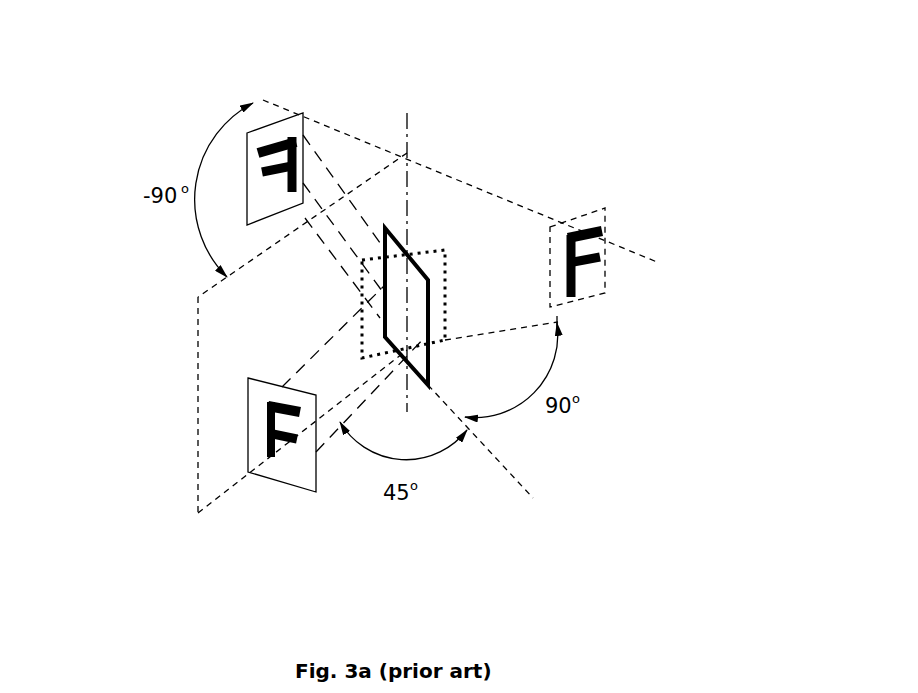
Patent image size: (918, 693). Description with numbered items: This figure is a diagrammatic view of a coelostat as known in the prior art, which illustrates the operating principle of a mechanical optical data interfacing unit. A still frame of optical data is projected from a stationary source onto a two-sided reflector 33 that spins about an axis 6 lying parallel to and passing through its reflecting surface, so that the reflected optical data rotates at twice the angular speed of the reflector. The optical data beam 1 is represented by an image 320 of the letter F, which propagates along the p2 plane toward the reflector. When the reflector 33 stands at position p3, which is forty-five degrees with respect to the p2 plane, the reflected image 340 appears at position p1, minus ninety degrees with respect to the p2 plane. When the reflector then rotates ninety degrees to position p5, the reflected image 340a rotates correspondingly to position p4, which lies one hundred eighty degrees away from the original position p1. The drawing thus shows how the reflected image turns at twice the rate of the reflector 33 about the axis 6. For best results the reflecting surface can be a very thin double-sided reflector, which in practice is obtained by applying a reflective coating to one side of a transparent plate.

The axis 6 is at (412, 135).
The light beam 1 is at (460, 181).
The mirror 33 is at (447, 233).
The reflected image 340 is at (315, 128).
The reflected image 340a is at (623, 220).
The image of the letter F 320 is at (287, 495).
The position p1 is at (263, 99).
The p2 plane p2 is at (193, 340).
The position p3 is at (537, 493).
The position p4 is at (655, 262).
The position p5 is at (572, 323).